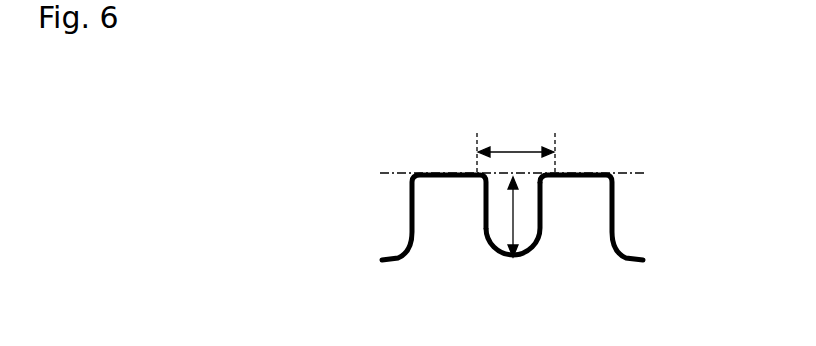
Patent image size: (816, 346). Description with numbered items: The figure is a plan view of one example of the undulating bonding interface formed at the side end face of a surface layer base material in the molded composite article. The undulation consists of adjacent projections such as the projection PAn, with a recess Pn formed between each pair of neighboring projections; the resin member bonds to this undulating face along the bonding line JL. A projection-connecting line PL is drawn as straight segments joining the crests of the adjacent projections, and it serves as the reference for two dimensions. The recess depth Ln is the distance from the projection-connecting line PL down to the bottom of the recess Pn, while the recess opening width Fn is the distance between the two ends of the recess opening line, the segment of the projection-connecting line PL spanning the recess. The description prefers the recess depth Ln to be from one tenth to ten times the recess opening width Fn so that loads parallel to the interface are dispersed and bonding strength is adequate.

The projection PAn is at (447, 175).
The recess opening width Fn is at (515, 147).
The projection-connecting line PL is at (500, 173).
The recess depth Ln is at (513, 225).
The recess Pn is at (500, 213).
The bonding line JL is at (540, 235).